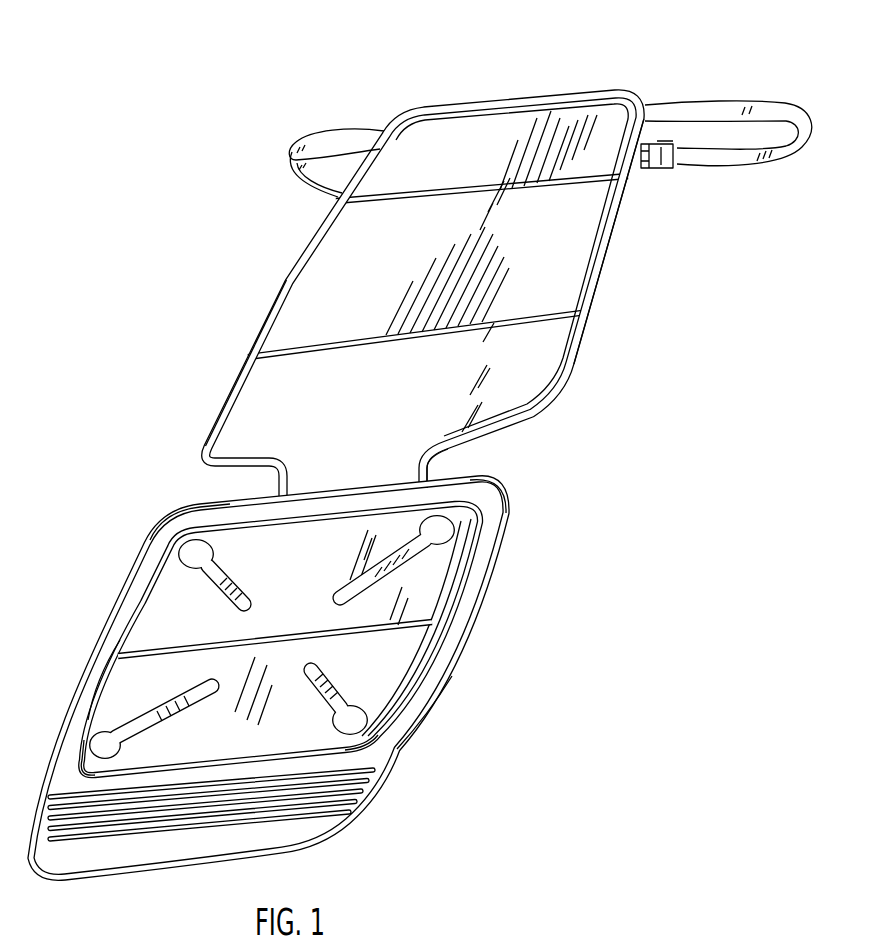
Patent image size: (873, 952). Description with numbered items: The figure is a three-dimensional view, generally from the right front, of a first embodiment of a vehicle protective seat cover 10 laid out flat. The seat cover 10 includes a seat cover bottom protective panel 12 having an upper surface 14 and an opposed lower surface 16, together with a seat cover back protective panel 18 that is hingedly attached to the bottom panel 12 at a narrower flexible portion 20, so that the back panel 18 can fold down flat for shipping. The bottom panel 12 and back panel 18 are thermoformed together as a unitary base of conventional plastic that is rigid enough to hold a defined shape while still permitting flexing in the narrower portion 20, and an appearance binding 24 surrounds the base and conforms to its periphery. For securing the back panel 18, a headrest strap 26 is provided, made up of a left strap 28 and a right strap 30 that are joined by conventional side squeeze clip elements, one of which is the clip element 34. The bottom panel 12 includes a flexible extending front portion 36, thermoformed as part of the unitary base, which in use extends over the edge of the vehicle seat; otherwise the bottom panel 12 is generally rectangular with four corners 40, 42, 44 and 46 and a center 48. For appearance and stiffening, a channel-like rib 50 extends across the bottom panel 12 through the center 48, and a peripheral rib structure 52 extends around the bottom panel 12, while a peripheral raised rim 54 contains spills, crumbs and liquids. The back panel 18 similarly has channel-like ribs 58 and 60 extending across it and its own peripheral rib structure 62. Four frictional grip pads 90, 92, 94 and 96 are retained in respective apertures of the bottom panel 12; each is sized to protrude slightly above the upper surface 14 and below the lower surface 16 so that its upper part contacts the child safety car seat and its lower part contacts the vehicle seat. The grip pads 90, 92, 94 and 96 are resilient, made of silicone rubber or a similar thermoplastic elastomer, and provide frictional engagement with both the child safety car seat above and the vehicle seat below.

The vehicle protective seat cover 10 is at (164, 102).
The seat cover bottom protective panel 12 is at (288, 682).
The upper surface 14 is at (427, 566).
The lower surface 16 is at (407, 731).
The seat cover back protective panel 18 is at (434, 297).
The narrower flexible portion 20 is at (415, 462).
The appearance binding 24 is at (583, 346).
The headrest strap 26 is at (549, 114).
The left strap 28 is at (342, 135).
The right strap 30 is at (778, 110).
The side squeeze clip element 34 is at (660, 166).
The flexible extending front portion 36 is at (318, 815).
The corner 40 is at (362, 742).
The corner 42 is at (508, 514).
The corner 44 is at (186, 535).
The corner 46 is at (88, 762).
The center 48 is at (290, 633).
The channel-like rib 50 is at (305, 630).
The peripheral rib structure 52 is at (128, 688).
The peripheral raised rim 54 is at (462, 578).
The channel-like rib 58 is at (395, 343).
The channel-like rib 60 is at (470, 188).
The peripheral rib structure 62 is at (290, 283).
The frictional grip pad 90 is at (345, 708).
The frictional grip pad 92 is at (380, 572).
The frictional grip pad 94 is at (196, 575).
The frictional grip pad 96 is at (133, 727).